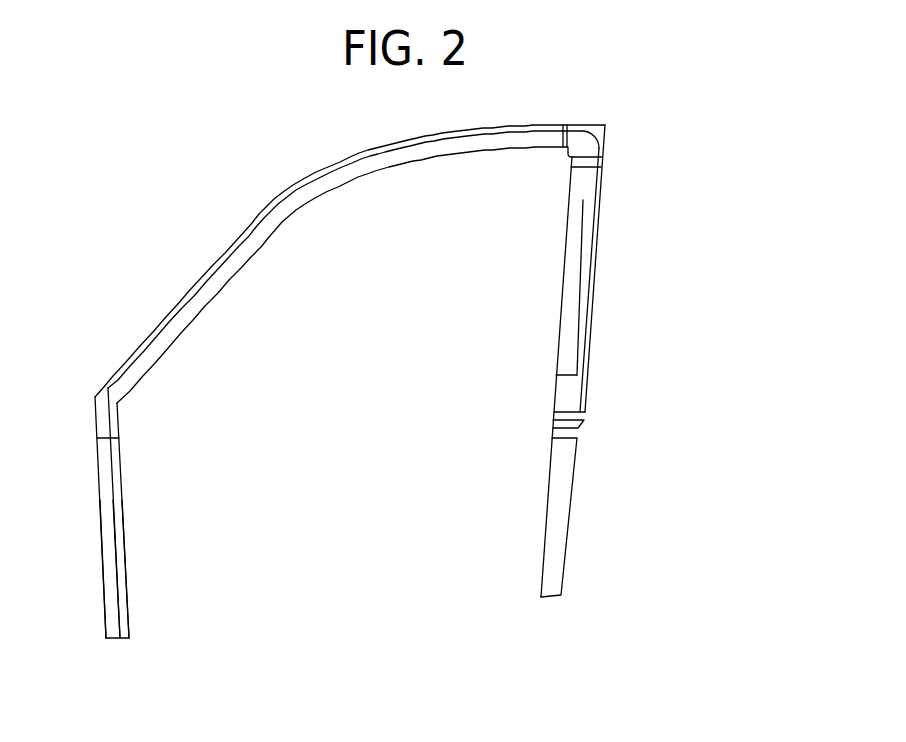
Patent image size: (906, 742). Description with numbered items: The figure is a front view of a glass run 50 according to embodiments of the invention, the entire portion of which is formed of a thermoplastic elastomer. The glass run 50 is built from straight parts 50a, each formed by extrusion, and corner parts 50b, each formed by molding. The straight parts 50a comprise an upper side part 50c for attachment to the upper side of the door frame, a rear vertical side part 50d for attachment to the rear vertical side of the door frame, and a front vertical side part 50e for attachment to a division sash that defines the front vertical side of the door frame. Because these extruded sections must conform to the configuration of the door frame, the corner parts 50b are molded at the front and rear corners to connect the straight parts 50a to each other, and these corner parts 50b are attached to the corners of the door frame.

The glass run 50 is at (405, 381).
The straight parts 50a is at (188, 290).
The corner parts 50b is at (607, 147).
The upper side part 50c is at (398, 160).
The rear vertical side part 50d is at (573, 290).
The front vertical side part 50e is at (110, 582).